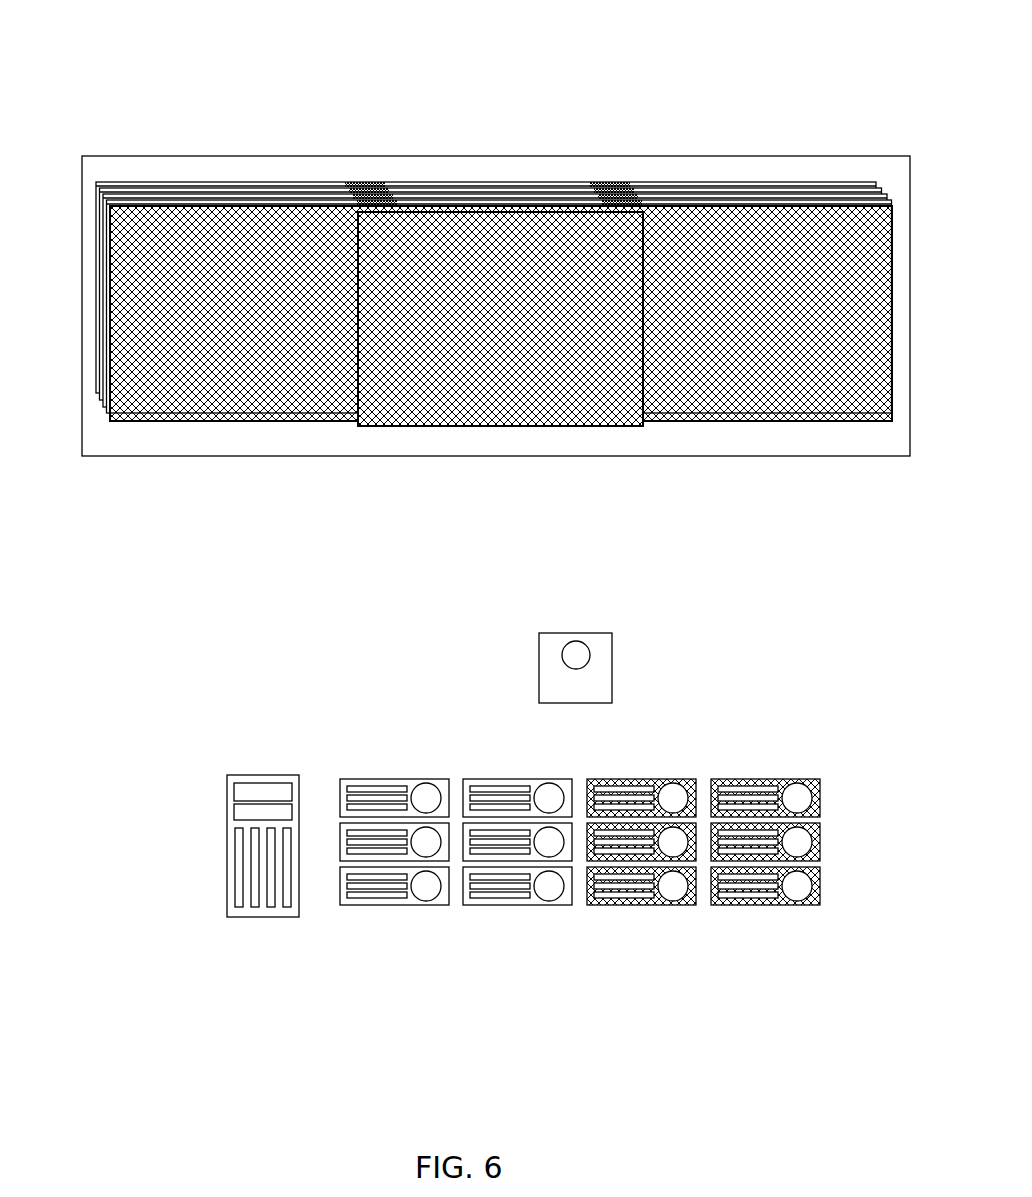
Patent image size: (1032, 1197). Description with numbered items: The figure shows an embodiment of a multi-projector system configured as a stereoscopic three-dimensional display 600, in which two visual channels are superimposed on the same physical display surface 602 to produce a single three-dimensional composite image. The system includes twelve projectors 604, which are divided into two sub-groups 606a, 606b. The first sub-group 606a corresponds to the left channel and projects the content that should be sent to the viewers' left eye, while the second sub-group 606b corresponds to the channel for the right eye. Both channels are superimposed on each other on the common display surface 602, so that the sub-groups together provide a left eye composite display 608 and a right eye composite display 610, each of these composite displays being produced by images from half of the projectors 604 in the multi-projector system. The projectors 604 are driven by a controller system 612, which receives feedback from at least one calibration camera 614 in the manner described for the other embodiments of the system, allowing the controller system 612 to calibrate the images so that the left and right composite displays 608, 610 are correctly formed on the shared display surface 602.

The stereoscopic/3D display 600 is at (378, 82).
The display surface 602 is at (562, 168).
The projectors 604 is at (579, 829).
The first sub-group 606a is at (576, 923).
The second sub-group 606b is at (824, 923).
The left eye composite display 608 is at (292, 168).
The right eye composite display 610 is at (390, 445).
The controller system 612 is at (257, 775).
The calibration camera 614 is at (600, 648).